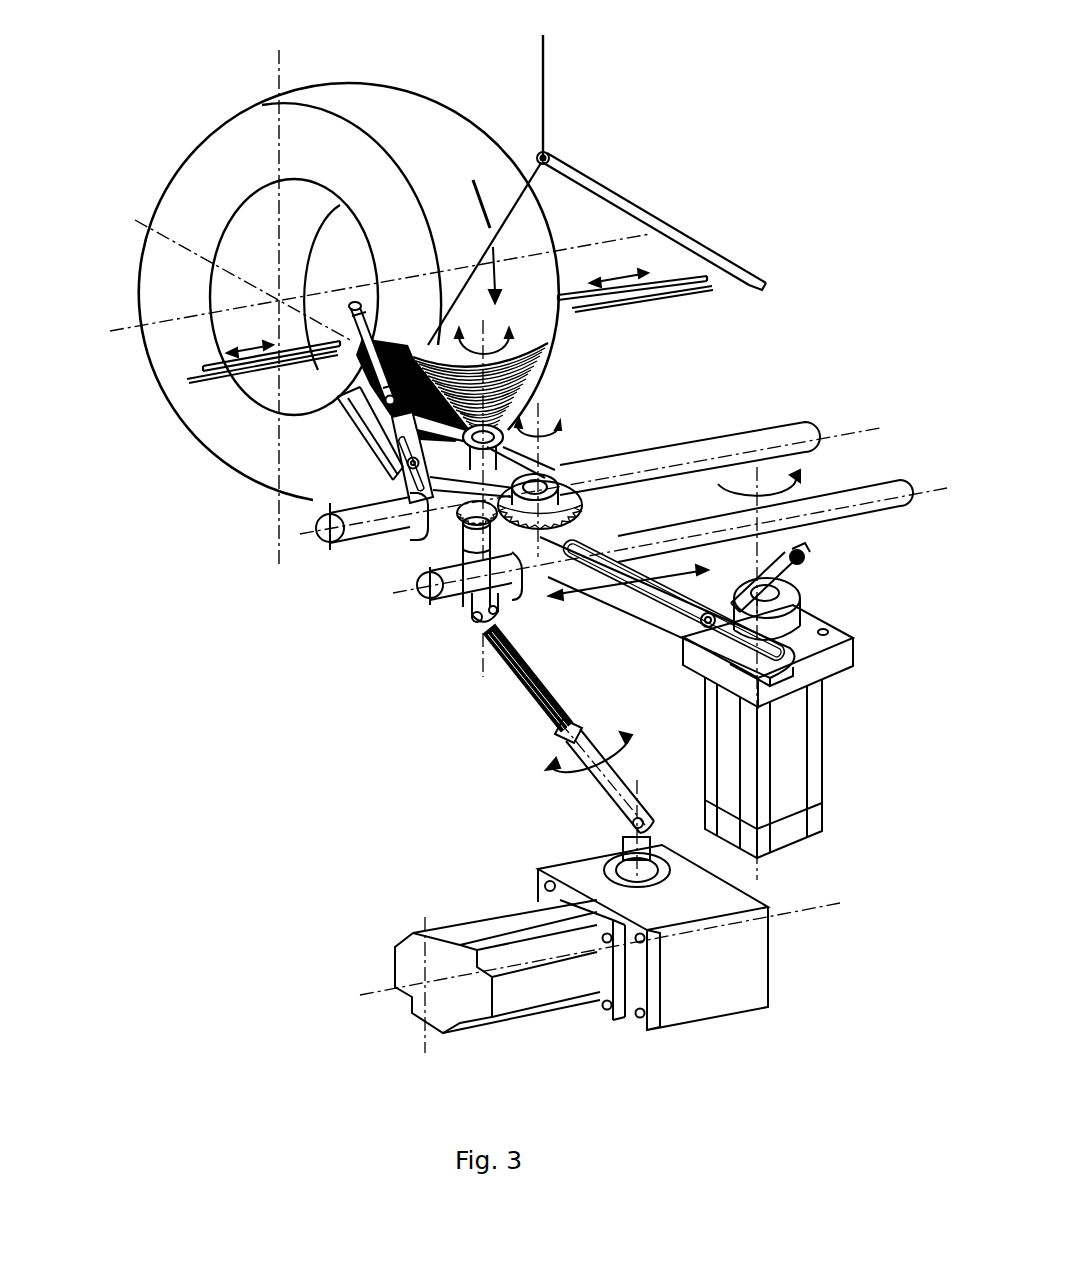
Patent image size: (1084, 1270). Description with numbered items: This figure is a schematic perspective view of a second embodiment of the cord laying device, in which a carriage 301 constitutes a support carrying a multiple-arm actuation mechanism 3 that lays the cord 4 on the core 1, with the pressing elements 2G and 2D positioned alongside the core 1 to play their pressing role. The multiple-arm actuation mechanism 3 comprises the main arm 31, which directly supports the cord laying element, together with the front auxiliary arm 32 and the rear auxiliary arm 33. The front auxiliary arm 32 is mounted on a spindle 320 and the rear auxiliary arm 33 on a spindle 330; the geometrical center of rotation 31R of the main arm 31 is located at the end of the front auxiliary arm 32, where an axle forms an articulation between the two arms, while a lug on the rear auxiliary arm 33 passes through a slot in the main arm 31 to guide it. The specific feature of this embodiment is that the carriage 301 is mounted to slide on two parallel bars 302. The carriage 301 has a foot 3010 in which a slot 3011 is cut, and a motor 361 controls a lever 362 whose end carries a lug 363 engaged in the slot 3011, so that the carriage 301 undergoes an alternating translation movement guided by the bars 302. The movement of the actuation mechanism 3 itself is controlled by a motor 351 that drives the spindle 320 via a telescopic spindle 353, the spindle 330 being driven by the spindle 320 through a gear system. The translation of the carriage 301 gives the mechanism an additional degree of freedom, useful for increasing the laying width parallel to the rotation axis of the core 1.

The core 1 is at (377, 107).
The cord 4 is at (548, 100).
The pressing element 2D is at (662, 276).
The pressing element 2G is at (210, 362).
The geometrical center of rotation 31R is at (352, 316).
The main arm 31 is at (345, 430).
The front auxiliary arm 32 is at (540, 362).
The rear auxiliary arm 33 is at (530, 453).
The spindle 330 is at (557, 465).
The parallel bars 302 is at (783, 431).
The multiple-arm actuation mechanism 3 is at (358, 455).
The carriage 301 is at (605, 482).
The foot 3010 is at (637, 605).
The slot 3011 is at (663, 620).
The lever 362 is at (808, 563).
The lug 363 is at (703, 645).
The motor 361 is at (793, 750).
The spindle 320 is at (467, 607).
The telescopic spindle 353 is at (560, 763).
The motor 351 is at (450, 943).